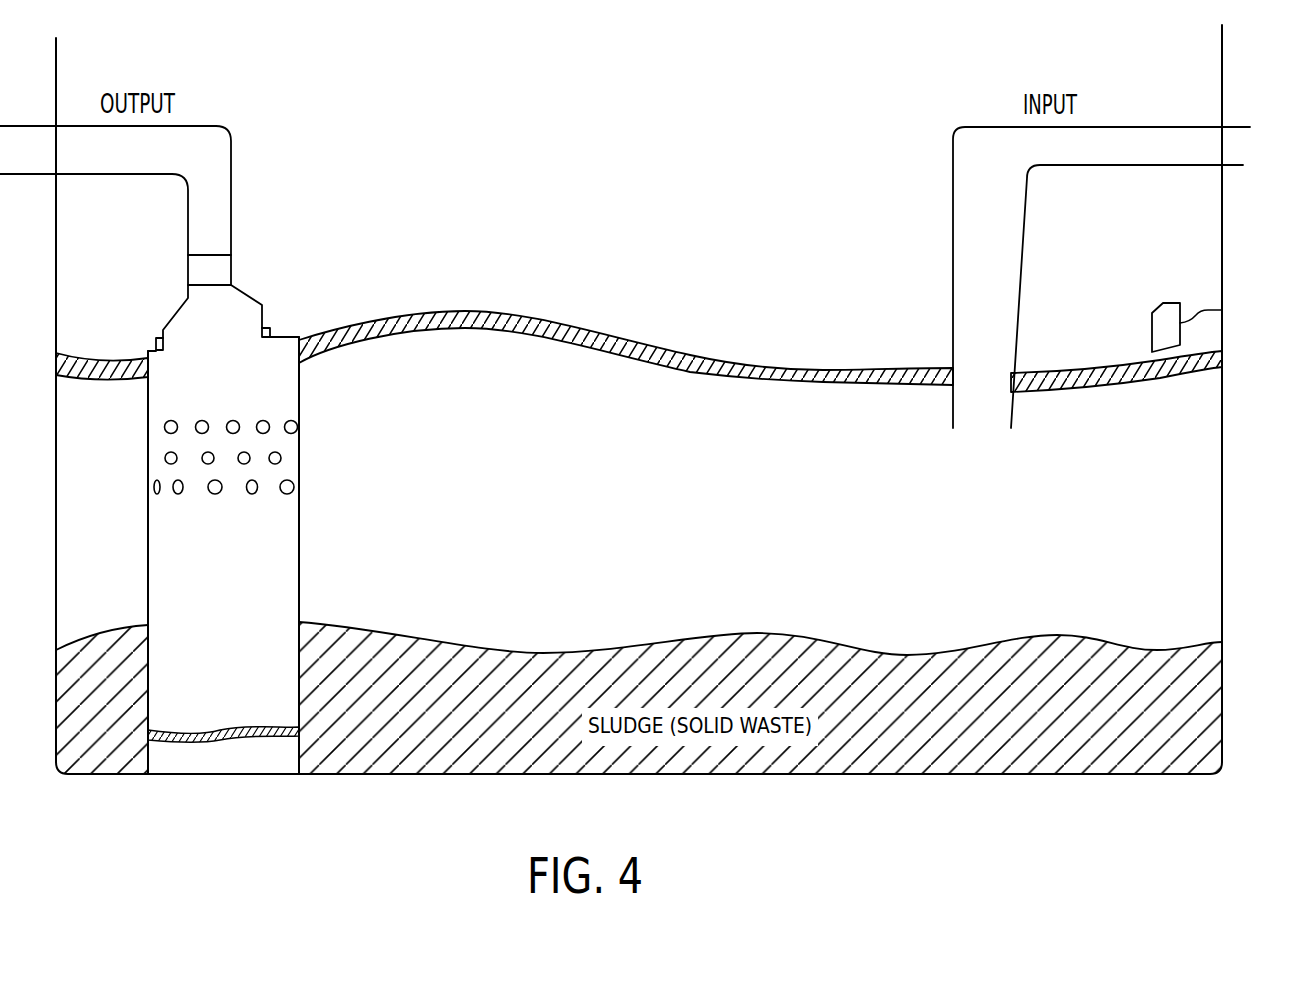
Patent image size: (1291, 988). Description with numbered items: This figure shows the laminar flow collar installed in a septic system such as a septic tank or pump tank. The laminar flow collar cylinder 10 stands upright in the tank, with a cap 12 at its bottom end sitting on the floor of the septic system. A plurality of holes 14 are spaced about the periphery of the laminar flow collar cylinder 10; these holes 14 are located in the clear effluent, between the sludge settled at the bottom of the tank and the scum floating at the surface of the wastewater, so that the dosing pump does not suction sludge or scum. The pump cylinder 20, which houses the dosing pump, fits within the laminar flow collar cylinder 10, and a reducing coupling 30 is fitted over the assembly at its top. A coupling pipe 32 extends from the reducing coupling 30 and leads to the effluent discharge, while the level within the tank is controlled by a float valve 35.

The laminar flow collar cylinder 10 is at (299, 538).
The cap 12 is at (280, 767).
The holes 14 is at (295, 482).
The pump cylinder 20 is at (270, 323).
The reducing coupling 30 is at (255, 295).
The coupling pipe 32 is at (225, 273).
The float valve 35 is at (1170, 302).